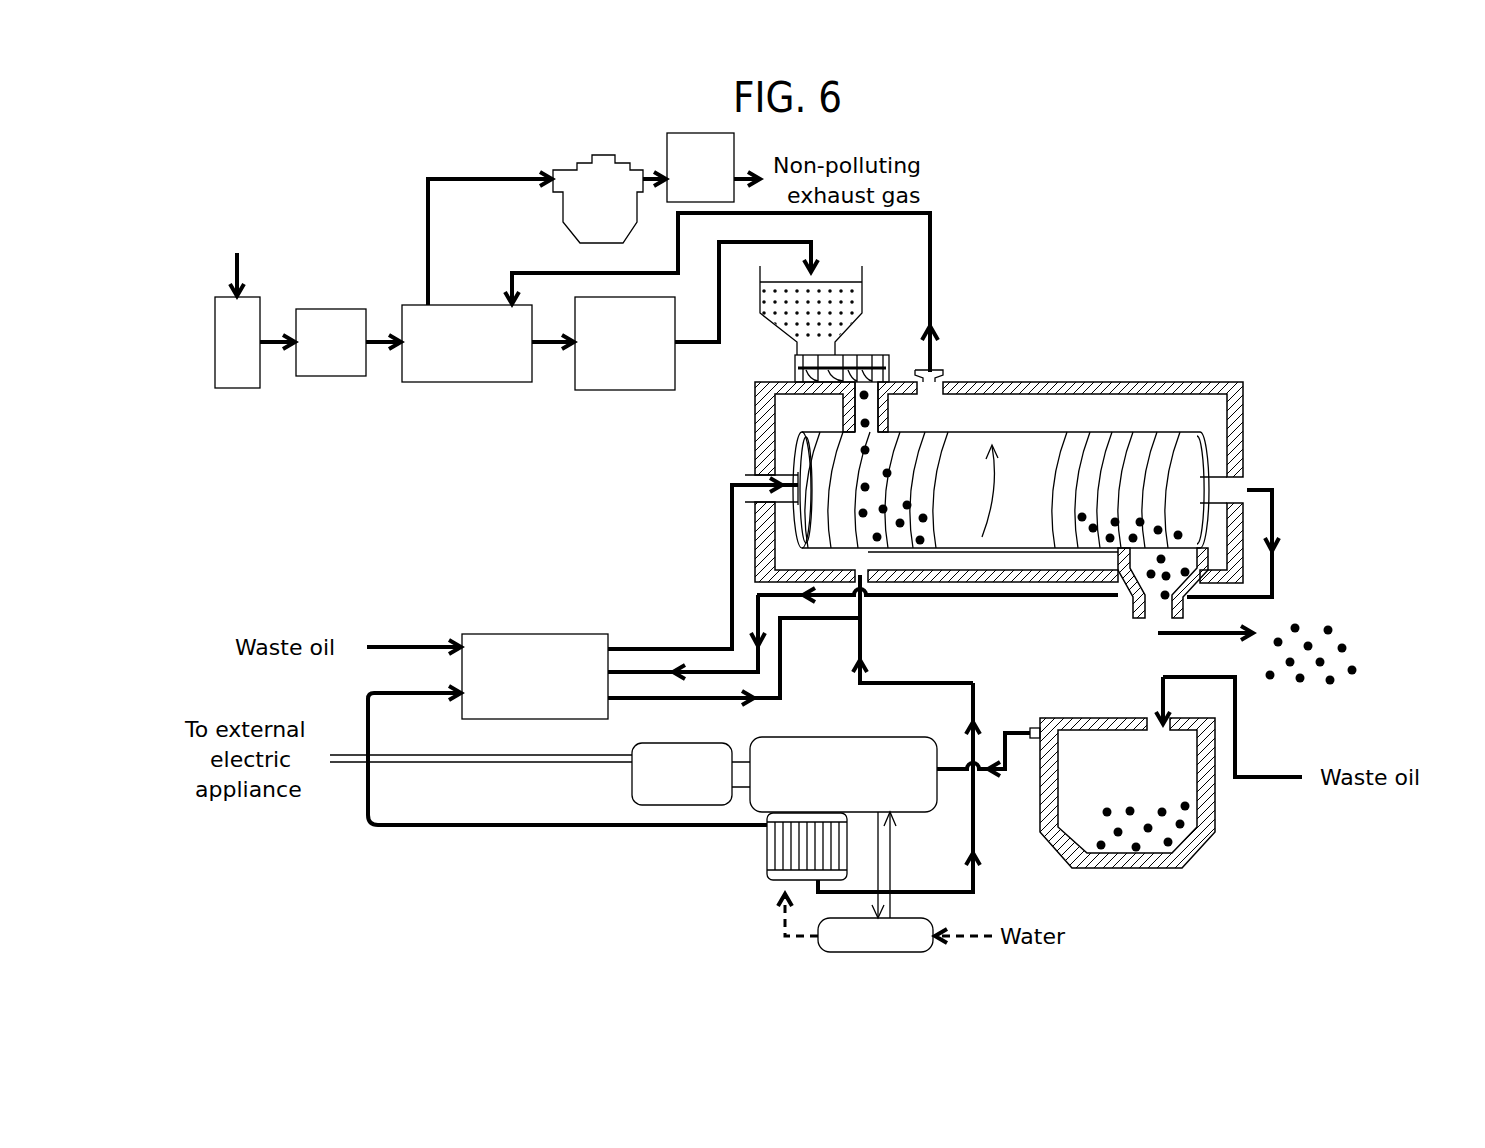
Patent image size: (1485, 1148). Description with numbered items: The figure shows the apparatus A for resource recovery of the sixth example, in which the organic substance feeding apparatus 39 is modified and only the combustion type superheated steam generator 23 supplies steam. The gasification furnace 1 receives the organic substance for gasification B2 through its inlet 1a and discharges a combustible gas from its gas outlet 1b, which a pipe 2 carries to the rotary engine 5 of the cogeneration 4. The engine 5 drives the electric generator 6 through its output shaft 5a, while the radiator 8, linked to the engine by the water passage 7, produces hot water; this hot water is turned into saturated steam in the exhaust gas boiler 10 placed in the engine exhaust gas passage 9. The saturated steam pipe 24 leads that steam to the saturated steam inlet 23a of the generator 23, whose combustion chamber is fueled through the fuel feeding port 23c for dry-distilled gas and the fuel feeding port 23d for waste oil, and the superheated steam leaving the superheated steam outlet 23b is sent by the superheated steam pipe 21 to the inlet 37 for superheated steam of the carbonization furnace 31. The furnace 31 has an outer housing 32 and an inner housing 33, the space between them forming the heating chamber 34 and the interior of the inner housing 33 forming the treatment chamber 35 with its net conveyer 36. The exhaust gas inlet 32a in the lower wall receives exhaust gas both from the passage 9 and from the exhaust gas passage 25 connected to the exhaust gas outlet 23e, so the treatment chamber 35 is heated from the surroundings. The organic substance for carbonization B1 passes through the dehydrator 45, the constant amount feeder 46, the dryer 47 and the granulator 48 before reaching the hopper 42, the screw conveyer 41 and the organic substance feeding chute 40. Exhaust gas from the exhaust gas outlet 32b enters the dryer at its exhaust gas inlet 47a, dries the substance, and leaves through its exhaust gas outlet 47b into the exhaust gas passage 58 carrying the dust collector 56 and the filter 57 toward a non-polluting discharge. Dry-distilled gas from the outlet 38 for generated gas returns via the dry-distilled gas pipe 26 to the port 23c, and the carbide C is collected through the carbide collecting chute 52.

The gasification furnace 1 is at (1153, 882).
The inlet 1a is at (1155, 716).
The gas outlet 1b is at (1032, 728).
The pipe 2 is at (1006, 778).
The cogeneration 4 is at (752, 860).
The rotary engine 5 is at (840, 737).
The output shaft 5a is at (742, 738).
The electric generator 6 is at (632, 783).
The water passage 7 is at (881, 858).
The radiator 8 is at (935, 932).
The exhaust gas passage 9 is at (975, 884).
The exhaust gas boiler 10 is at (767, 848).
The superheated steam pipe 21 is at (731, 520).
The combustion type superheated steam generator 23 is at (460, 706).
The saturated steam inlet 23a is at (460, 690).
The superheated steam outlet 23b is at (610, 646).
The fuel feeding port for dry-distilled gas 23c is at (610, 674).
The fuel feeding port for waste oil 23d is at (462, 634).
The exhaust gas outlet 23e is at (608, 700).
The saturated steam pipe 24 is at (543, 826).
The exhaust gas passage 25 is at (782, 657).
The dry-distilled gas pipe 26 is at (976, 600).
The carbonization furnace 31 is at (1130, 373).
The outer housing 32 is at (1215, 383).
The exhaust gas inlet 32a is at (866, 582).
The exhaust gas outlet 32b is at (938, 381).
The inner housing 33 is at (1062, 432).
The heating chamber 34 is at (1036, 400).
The treatment chamber 35 is at (930, 450).
The net conveyer 36 is at (1136, 470).
The inlet for superheated steam 37 is at (797, 480).
The outlet for generated gas 38 is at (1232, 492).
The organic substance feeding apparatus 39 is at (489, 466).
The organic substance feeding chute 40 is at (893, 400).
The screw conveyer 41 is at (848, 352).
The hopper 42 is at (862, 298).
The dehydrator 45 is at (237, 388).
The constant amount feeder 46 is at (331, 376).
The dryer 47 is at (448, 388).
The exhaust gas inlet 47a is at (510, 303).
The exhaust gas outlet 47b is at (428, 303).
The granulator 48 is at (608, 390).
The carbide collecting chute 52 is at (1125, 589).
The dust collector 56 is at (568, 236).
The filter 57 is at (667, 140).
The exhaust gas passage 58 is at (468, 181).
The apparatus for resource recovery A is at (315, 205).
The organic substance for carbonization B1 is at (238, 257).
The organic substance for gasification B2 is at (1185, 806).
The carbide C is at (1342, 645).